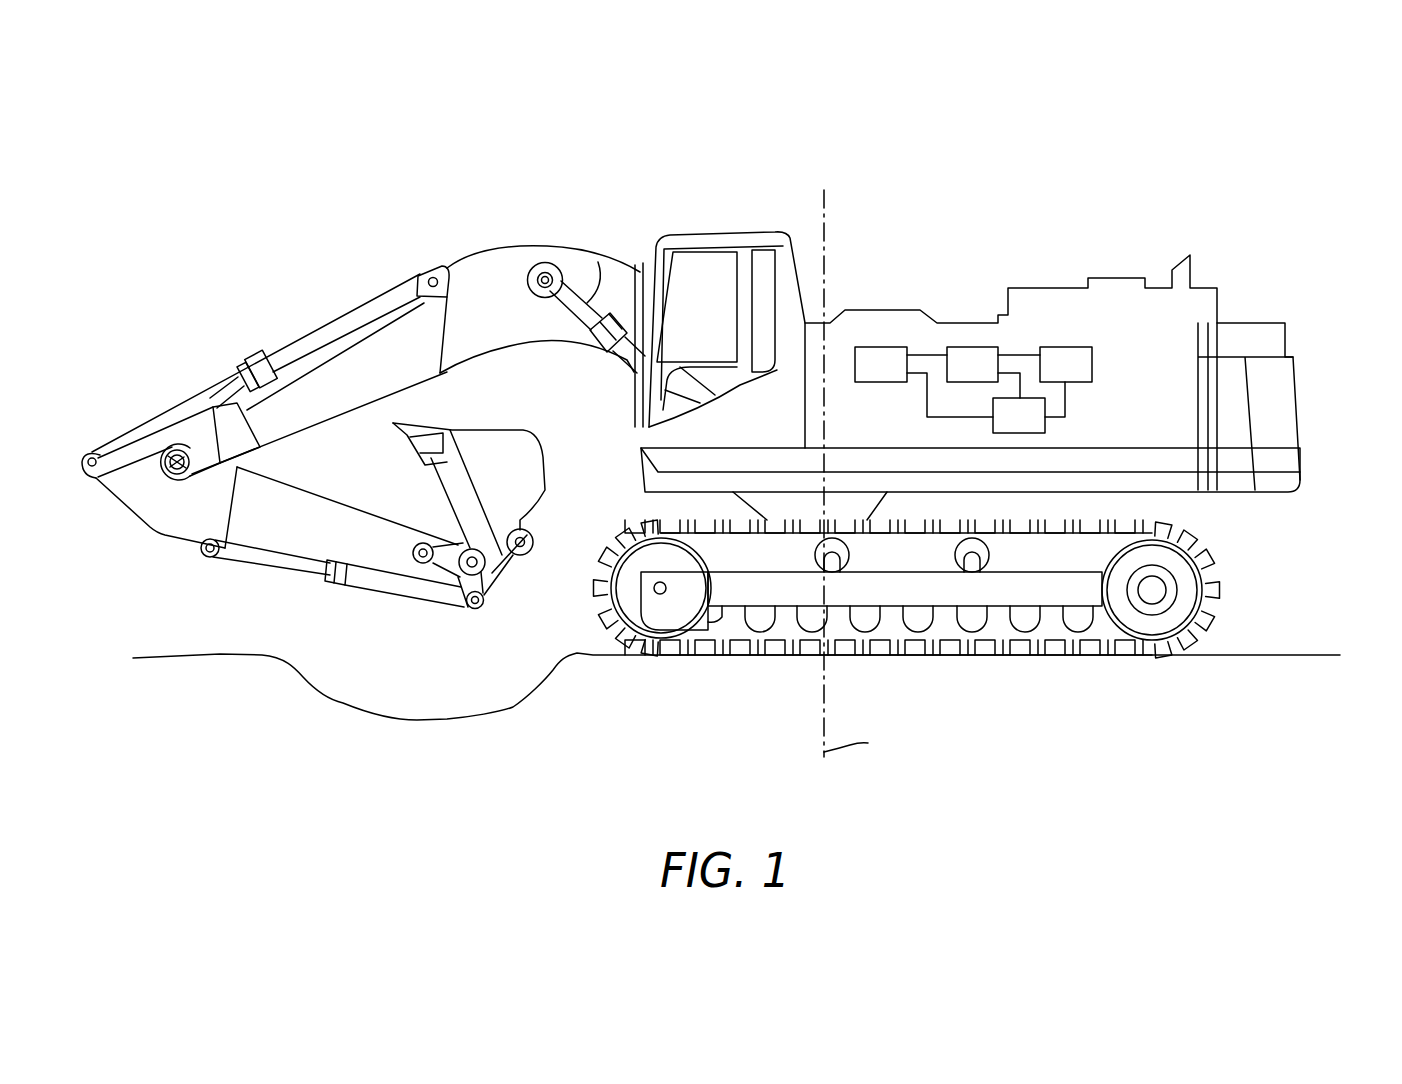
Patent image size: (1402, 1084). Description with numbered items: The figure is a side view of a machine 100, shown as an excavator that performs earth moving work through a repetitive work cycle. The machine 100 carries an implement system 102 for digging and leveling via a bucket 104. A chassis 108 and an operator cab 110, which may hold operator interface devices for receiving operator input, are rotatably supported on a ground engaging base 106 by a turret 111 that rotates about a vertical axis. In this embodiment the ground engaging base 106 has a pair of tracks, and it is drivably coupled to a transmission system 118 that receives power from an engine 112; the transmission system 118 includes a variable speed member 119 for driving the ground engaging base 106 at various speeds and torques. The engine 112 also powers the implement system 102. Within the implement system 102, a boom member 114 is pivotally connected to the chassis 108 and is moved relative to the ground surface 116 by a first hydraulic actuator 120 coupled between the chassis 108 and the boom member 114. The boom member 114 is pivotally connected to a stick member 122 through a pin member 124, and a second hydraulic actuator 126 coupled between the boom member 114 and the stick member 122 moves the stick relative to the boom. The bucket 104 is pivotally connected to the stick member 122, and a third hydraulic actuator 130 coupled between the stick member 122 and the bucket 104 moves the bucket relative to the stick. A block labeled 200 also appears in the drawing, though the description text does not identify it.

The machine 100 is at (1200, 176).
The implement system 102 is at (275, 270).
The bucket 104 is at (548, 470).
The ground engaging base 106 is at (1211, 618).
The chassis 108 is at (1300, 376).
The operator cab 110 is at (727, 340).
The turret 111 is at (885, 505).
The engine 112 is at (993, 372).
The boom member 114 is at (547, 258).
The ground surface 116 is at (597, 657).
The transmission system 118 is at (1066, 382).
The variable speed member 119 is at (1019, 415).
The first hydraulic actuator 120 is at (604, 266).
The stick member 122 is at (110, 503).
The pin member 124 is at (167, 448).
The second hydraulic actuator 126 is at (338, 300).
The third hydraulic actuator 130 is at (382, 592).
The control system 200 is at (924, 382).